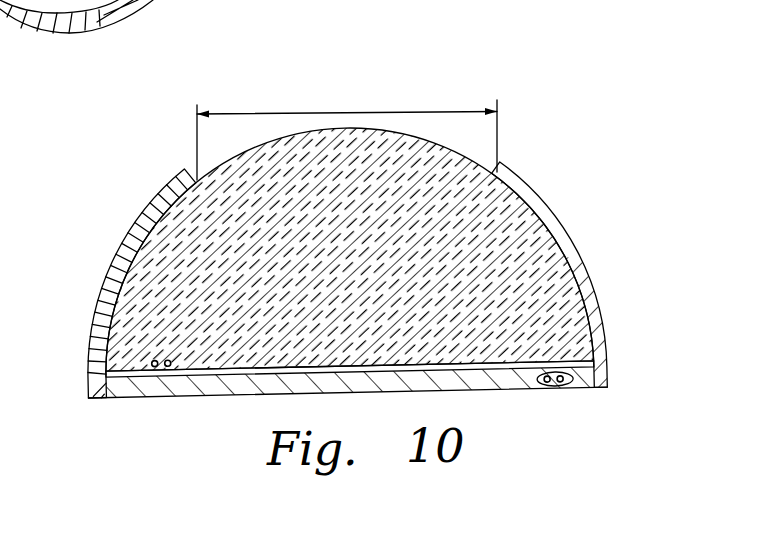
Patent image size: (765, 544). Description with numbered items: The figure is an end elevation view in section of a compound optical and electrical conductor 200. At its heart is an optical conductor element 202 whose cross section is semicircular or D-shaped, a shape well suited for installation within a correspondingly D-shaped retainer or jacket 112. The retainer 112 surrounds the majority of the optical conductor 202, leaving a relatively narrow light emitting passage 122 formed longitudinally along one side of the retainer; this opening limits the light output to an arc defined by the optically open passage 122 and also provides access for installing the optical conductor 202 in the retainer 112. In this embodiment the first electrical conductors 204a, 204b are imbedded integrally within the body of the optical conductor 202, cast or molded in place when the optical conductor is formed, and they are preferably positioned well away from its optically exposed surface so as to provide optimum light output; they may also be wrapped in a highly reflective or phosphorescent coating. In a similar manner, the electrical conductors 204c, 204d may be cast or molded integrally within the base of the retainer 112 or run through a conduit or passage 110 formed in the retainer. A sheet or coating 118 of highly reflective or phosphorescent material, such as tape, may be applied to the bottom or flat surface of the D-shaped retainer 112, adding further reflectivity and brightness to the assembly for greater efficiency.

The compound conductor 200 is at (489, 75).
The optical conductor element 202 is at (177, 228).
The retainer or jacket 112 is at (563, 215).
The conduit or passage 110 is at (580, 375).
The sheet or coating of highly reflective or phosphorescent material 118 is at (360, 383).
The light emitting passage 122 is at (333, 112).
The first electrical conductor 204a is at (155, 363).
The first electrical conductor 204b is at (160, 413).
The electrical conductor 204c is at (549, 387).
The electrical conductor 204d is at (565, 421).